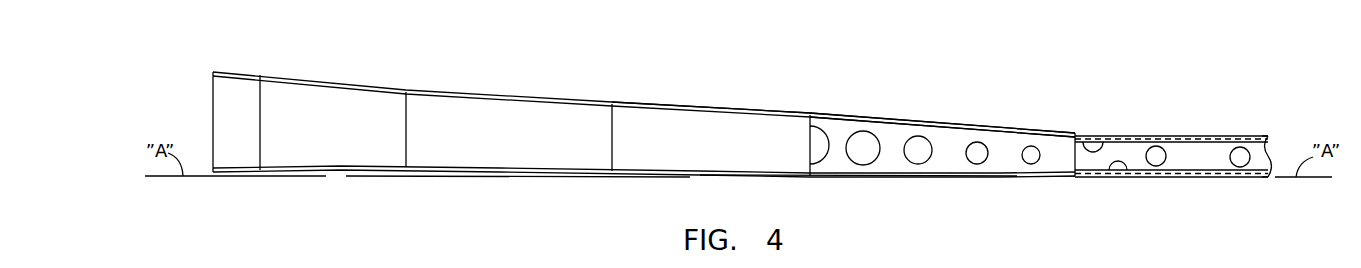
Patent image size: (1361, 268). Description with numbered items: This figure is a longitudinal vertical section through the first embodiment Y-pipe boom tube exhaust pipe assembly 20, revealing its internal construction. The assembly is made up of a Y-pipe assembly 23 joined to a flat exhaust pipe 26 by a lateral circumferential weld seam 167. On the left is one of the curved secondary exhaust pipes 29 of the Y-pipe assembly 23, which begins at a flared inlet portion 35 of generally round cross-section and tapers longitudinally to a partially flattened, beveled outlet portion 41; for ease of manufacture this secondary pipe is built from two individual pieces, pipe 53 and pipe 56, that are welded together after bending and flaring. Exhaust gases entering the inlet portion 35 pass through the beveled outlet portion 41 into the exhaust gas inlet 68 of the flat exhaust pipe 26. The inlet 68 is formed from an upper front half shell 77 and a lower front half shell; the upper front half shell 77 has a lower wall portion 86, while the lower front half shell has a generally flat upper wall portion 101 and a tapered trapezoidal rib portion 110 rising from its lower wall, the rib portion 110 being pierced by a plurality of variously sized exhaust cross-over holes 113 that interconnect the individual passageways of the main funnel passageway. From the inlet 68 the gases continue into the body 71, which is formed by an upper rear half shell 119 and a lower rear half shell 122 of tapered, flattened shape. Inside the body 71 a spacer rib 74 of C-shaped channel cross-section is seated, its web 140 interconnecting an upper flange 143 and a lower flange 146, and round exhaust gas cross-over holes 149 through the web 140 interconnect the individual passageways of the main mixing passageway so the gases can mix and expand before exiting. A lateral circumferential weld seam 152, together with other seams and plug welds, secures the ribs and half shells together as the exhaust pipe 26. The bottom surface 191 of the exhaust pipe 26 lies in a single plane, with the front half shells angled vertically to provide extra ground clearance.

The Y-pipe boom tube exhaust pipe assembly 20 is at (992, 57).
The Y-pipe assembly 23 is at (679, 84).
The flat exhaust pipe 26 is at (1117, 88).
The secondary exhaust pipe 29 is at (335, 175).
The flared inlet portion 35 is at (239, 72).
The beveled outlet portion 41 is at (731, 107).
The pipe 53 is at (337, 82).
The pipe 56 is at (638, 102).
The exhaust gas inlet 68 is at (942, 122).
The body 71 is at (1198, 133).
The spacer rib 74 is at (1265, 150).
The upper front half shell 77 is at (1009, 177).
The lower wall portion 86 is at (958, 178).
The upper wall portion 101 is at (988, 129).
The rib portion 110 is at (890, 163).
The exhaust cross-over holes 113 is at (908, 139).
The upper rear half shell 119 is at (1140, 136).
The lower rear half shell 122 is at (1154, 178).
The web 140 is at (1210, 153).
The upper flange 143 is at (1102, 148).
The lower flange 146 is at (1127, 165).
The exhaust gas cross-over holes 149 is at (1165, 162).
The lateral circumferential weld seam 152 is at (1075, 178).
The lateral circumferential weld seam 167 is at (811, 113).
The bottom surface 191 is at (913, 178).